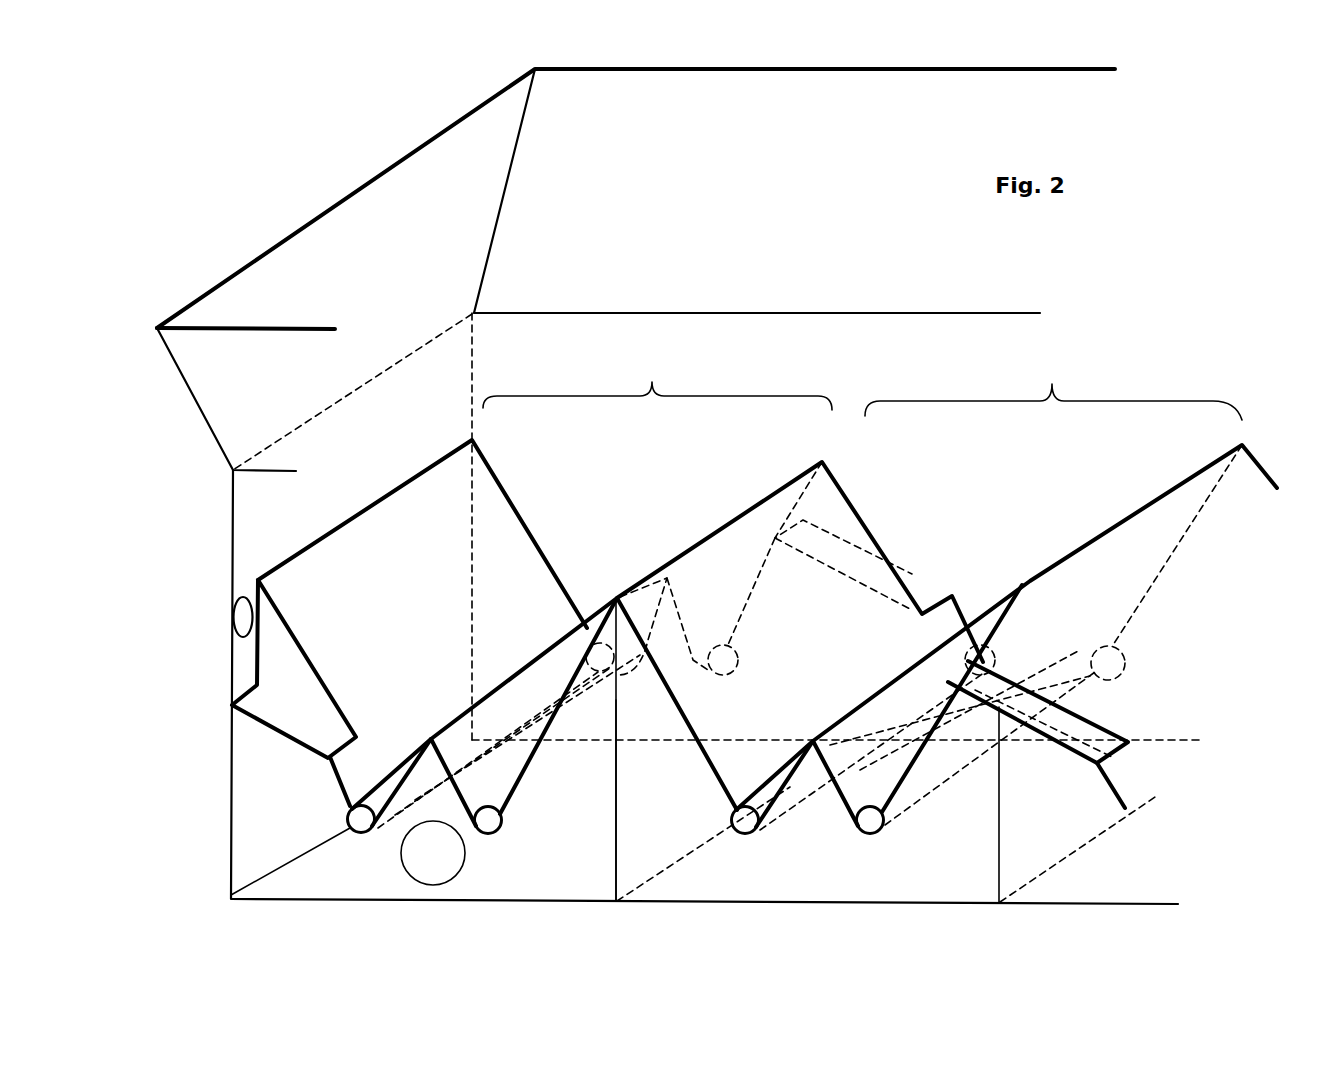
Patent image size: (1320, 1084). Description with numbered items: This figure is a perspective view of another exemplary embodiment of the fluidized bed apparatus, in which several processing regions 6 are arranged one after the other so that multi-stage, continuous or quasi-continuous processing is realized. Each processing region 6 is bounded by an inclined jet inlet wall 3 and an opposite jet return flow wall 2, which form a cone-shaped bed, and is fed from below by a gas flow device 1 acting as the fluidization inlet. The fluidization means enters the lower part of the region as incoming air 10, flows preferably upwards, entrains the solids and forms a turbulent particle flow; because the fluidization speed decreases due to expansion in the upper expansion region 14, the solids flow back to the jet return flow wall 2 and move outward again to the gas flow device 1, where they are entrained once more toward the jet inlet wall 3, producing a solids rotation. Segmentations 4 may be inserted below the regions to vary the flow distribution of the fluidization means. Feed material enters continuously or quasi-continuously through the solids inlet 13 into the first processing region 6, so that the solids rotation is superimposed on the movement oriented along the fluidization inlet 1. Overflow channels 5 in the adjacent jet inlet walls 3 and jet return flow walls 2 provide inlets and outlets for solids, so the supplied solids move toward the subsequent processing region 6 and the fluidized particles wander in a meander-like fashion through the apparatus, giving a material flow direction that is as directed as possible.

The gas flow device 1 is at (358, 823).
The jet return flow wall 2 is at (400, 577).
The jet inlet wall 3 is at (420, 782).
The segmentation 4 is at (617, 838).
The overflow channel 5 is at (285, 683).
The processing region 6 is at (862, 376).
The incoming air 10 is at (434, 857).
The solids inlet 13 is at (232, 618).
The upper expansion region 14 is at (345, 193).